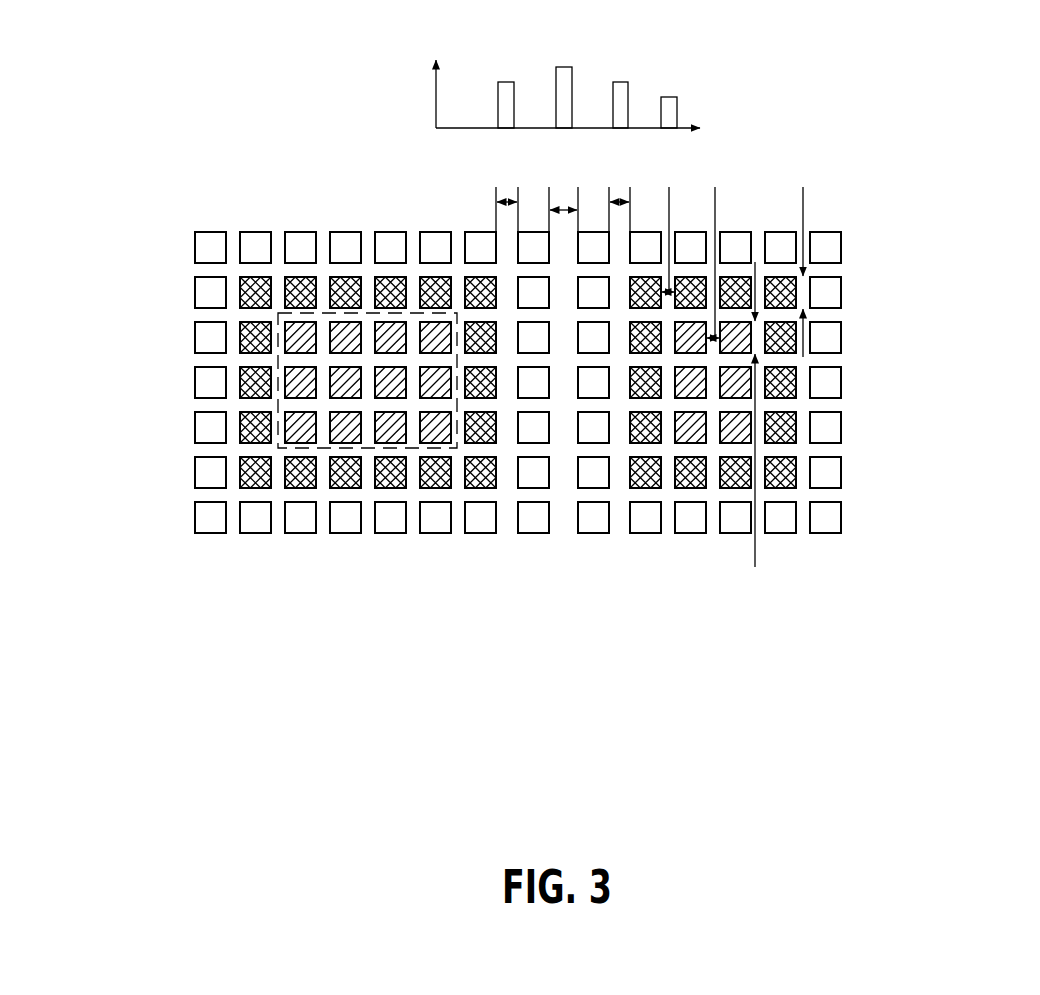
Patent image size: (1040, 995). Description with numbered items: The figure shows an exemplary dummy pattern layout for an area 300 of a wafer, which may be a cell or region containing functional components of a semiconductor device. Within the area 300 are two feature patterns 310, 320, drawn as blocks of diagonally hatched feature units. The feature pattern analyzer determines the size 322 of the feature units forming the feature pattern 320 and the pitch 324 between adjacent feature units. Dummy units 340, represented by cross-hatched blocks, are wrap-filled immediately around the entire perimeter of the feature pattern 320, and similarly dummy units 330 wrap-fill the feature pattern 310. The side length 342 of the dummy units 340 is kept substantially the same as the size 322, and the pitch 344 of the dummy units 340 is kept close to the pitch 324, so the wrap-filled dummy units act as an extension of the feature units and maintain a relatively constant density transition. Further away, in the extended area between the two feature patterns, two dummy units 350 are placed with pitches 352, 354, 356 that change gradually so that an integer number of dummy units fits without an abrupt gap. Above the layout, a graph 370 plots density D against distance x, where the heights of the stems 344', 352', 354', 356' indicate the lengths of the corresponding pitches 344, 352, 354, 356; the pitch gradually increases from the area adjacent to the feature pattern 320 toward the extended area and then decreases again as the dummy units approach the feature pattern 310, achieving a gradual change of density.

The area 300 is at (536, 726).
The feature pattern 310 is at (276, 452).
The feature pattern 320 is at (692, 450).
The size 322 is at (753, 431).
The pitch 324 is at (718, 248).
The dummy units 330 is at (265, 267).
The dummy units 340 is at (803, 386).
The side length 342 is at (805, 255).
The pitch 344 is at (670, 225).
The dummy units 350 is at (591, 546).
The pitch 352 is at (618, 195).
The pitch 354 is at (563, 195).
The pitch 356 is at (508, 195).
The graph 370 is at (612, 78).
The stem 352' is at (625, 89).
The stem 354' is at (565, 73).
The stem 356' is at (508, 89).
The stem 344' is at (672, 95).